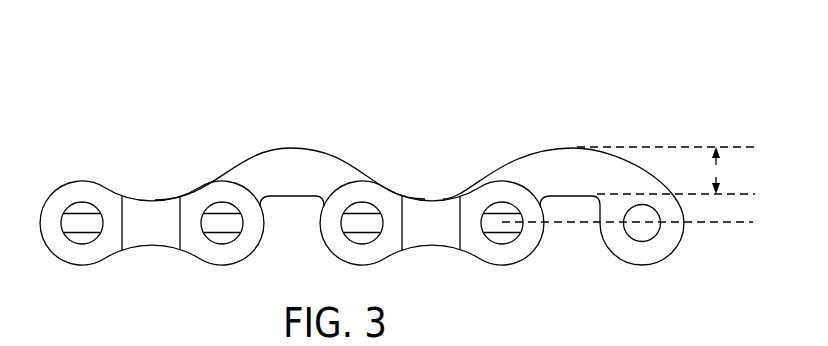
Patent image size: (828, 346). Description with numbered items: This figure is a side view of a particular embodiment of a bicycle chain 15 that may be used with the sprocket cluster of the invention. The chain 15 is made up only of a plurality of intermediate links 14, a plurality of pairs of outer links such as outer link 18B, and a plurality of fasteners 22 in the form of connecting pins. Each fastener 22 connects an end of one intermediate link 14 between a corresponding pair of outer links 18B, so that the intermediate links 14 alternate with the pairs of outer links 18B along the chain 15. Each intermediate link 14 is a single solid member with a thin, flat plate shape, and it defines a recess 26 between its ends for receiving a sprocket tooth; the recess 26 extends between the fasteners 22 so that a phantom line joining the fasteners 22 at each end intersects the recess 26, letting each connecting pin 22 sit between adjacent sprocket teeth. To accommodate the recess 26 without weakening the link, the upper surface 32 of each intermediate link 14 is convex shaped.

The bicycle chain 15 is at (216, 61).
The intermediate link 14 is at (218, 173).
The upper surface 32 is at (293, 147).
The fastener 22 is at (78, 210).
The recess 26 is at (289, 198).
The outer link 18B is at (472, 258).